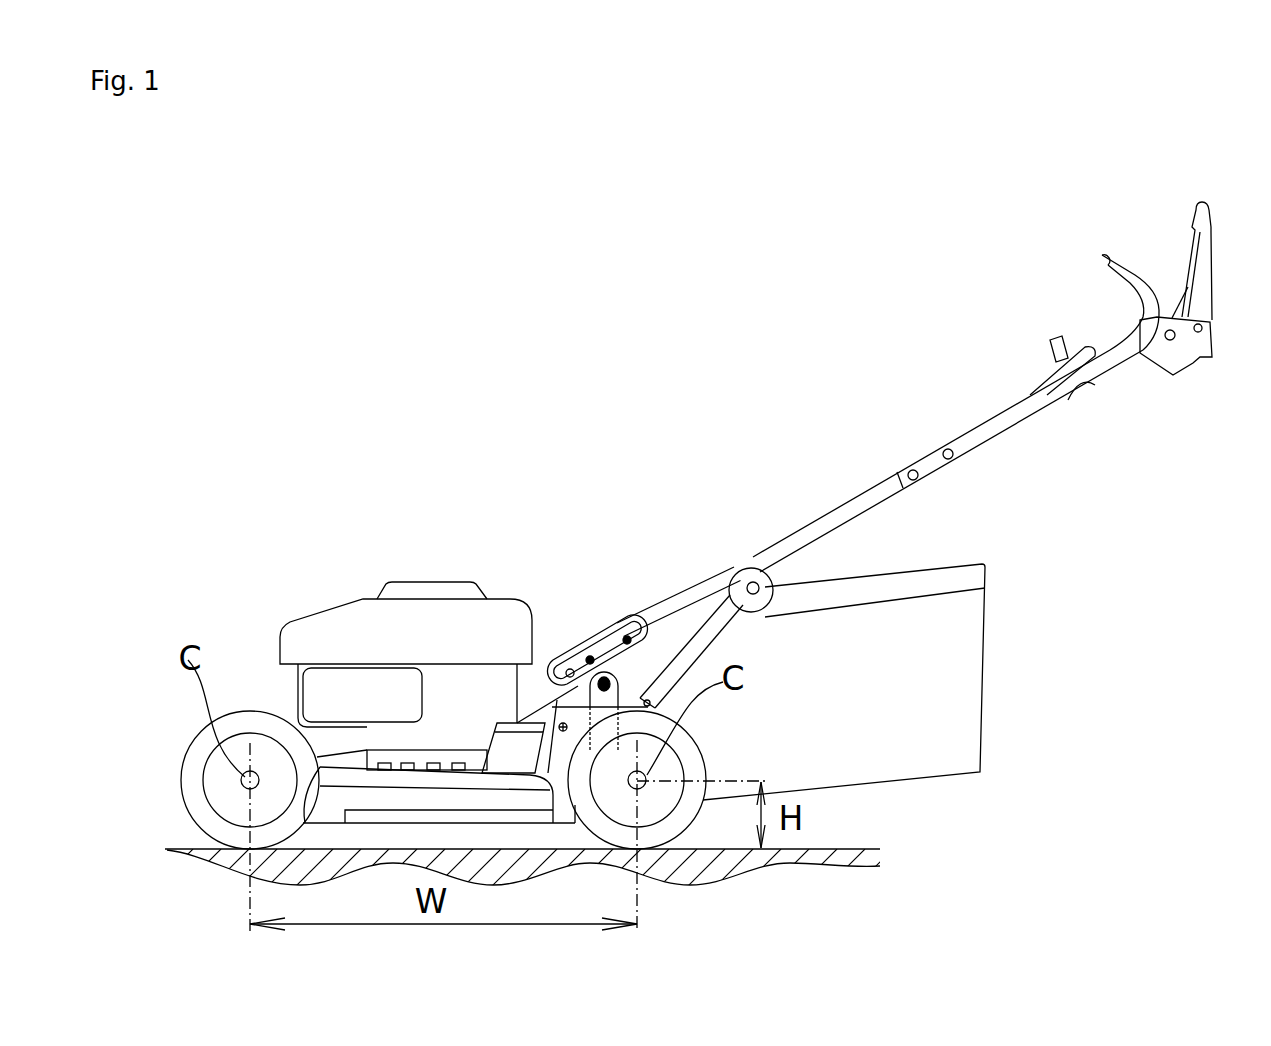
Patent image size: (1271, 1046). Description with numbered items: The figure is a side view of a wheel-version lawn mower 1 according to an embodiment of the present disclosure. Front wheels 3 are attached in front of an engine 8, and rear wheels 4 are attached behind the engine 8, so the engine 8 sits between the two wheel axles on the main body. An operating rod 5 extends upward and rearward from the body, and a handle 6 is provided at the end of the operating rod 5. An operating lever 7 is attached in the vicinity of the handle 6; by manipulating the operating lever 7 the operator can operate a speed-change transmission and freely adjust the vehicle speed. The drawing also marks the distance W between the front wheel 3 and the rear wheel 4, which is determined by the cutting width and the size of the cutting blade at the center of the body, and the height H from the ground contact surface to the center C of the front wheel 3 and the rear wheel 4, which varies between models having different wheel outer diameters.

The lawn mower 1 is at (598, 578).
The front wheel 3 is at (178, 770).
The rear wheel 4 is at (705, 770).
The operating rod 5 is at (822, 513).
The handle 6 is at (1103, 250).
The operating lever 7 is at (1050, 336).
The engine 8 is at (353, 598).